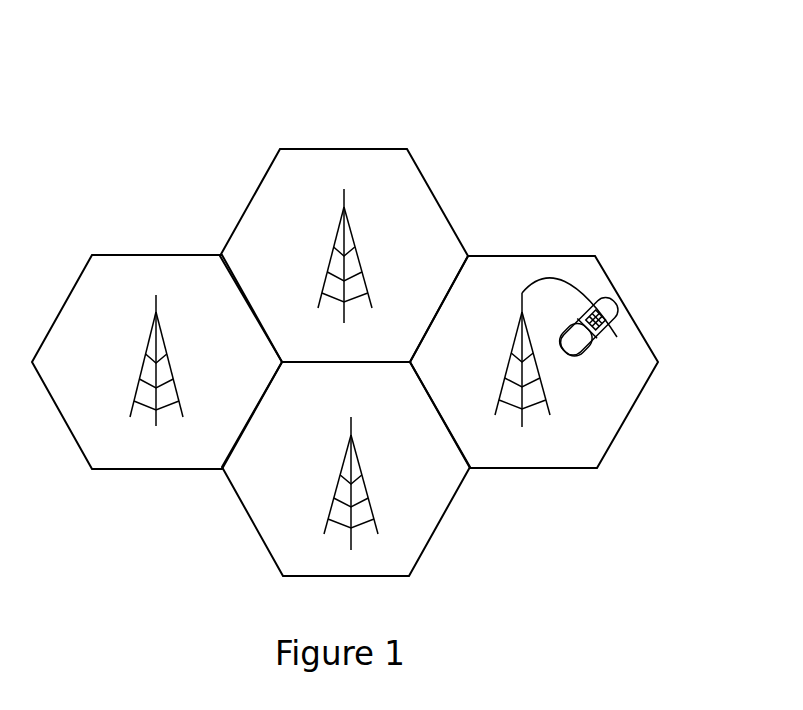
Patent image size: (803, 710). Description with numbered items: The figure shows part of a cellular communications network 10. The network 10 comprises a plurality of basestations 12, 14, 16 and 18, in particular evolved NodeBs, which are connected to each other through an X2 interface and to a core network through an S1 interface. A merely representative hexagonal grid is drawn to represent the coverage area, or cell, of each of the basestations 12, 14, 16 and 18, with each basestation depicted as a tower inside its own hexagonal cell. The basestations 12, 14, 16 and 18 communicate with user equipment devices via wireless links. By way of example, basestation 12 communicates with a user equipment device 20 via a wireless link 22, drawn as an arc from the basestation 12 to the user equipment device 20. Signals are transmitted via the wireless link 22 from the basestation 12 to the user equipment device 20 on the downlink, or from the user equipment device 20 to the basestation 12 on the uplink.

The cellular communications network 10 is at (413, 113).
The basestation 12 is at (506, 418).
The basestation 14 is at (358, 315).
The basestation 16 is at (168, 320).
The basestation 18 is at (367, 541).
The user equipment device 20 is at (612, 340).
The wireless link 22 is at (563, 268).